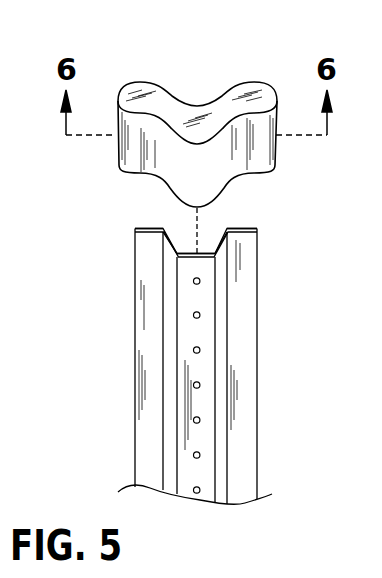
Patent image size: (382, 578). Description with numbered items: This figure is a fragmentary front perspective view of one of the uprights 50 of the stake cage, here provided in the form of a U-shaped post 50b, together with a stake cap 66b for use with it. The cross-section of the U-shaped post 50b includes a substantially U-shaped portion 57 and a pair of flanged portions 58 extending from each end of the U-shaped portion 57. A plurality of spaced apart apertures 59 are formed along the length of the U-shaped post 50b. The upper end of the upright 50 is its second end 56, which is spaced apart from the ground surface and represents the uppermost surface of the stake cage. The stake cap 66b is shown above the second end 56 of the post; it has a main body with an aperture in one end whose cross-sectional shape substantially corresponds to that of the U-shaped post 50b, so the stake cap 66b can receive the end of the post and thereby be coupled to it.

The upright 50 is at (174, 344).
The U-shaped post 50b is at (140, 293).
The second end 56 is at (186, 367).
The U-shaped portion 57 is at (188, 252).
The flanged portions 58 is at (135, 229).
The apertures 59 is at (201, 281).
The stake cap 66b is at (169, 97).